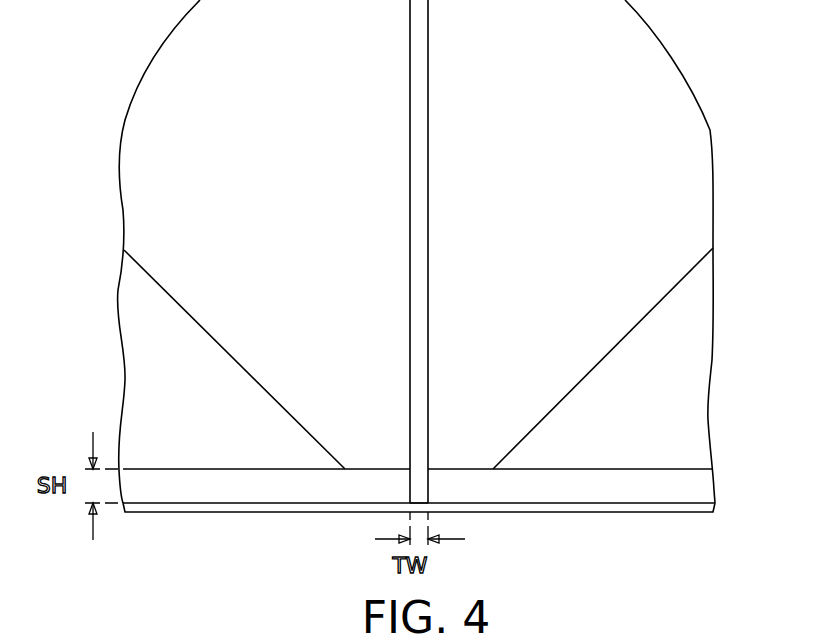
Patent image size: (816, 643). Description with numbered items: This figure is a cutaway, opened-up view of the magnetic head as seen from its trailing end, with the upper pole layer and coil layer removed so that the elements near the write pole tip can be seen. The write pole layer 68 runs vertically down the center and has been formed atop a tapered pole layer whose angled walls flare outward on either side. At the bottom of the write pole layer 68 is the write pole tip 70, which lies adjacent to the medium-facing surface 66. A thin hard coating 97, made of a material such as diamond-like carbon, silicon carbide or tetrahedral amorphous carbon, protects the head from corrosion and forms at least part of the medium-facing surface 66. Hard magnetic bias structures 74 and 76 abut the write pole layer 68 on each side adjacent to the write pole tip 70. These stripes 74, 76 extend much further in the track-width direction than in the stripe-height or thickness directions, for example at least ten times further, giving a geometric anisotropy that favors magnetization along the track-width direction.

The medium-facing surface 66 is at (617, 522).
The write pole layer 68 is at (428, 318).
The write pole tip 70 is at (419, 496).
The hard magnetic bias structure 74 is at (230, 469).
The hard magnetic bias structure 76 is at (621, 469).
The thin hard coating 97 is at (177, 503).